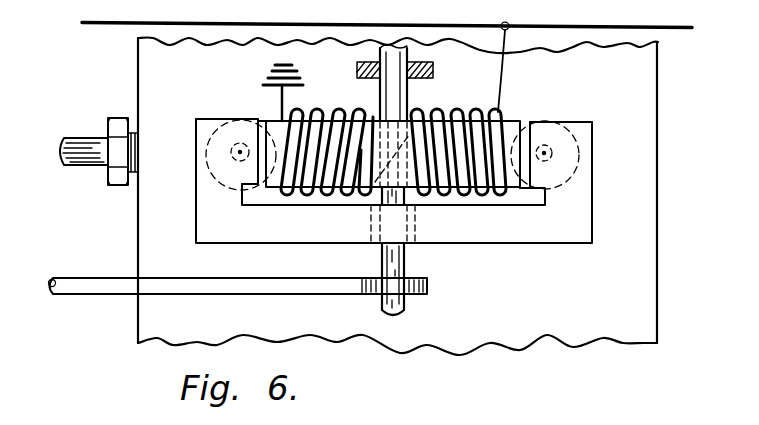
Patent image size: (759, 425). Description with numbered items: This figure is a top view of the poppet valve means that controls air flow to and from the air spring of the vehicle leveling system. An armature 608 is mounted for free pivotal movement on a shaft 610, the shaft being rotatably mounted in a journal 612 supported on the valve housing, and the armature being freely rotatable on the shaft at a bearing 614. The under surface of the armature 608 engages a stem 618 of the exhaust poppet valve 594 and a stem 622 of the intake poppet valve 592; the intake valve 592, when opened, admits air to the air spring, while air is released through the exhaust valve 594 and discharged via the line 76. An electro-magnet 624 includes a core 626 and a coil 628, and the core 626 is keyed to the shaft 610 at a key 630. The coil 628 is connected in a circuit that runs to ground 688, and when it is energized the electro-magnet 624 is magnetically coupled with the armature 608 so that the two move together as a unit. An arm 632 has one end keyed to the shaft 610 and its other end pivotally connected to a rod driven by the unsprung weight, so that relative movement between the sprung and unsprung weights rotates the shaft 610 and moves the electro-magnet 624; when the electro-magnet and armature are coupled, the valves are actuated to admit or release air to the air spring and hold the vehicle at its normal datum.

The line 76 is at (72, 138).
The stem 618 is at (230, 151).
The exhaust poppet valve 594 is at (213, 178).
The ground 688 is at (268, 86).
The journal 612 is at (357, 70).
The key 630 is at (388, 135).
The coil 628 is at (434, 116).
The electro-magnet 624 is at (499, 114).
The stem 622 is at (547, 153).
The intake poppet valve 592 is at (567, 188).
The armature 608 is at (583, 208).
The core 626 is at (510, 190).
The shaft 610 is at (398, 260).
The bearing 614 is at (370, 223).
The arm 632 is at (100, 278).